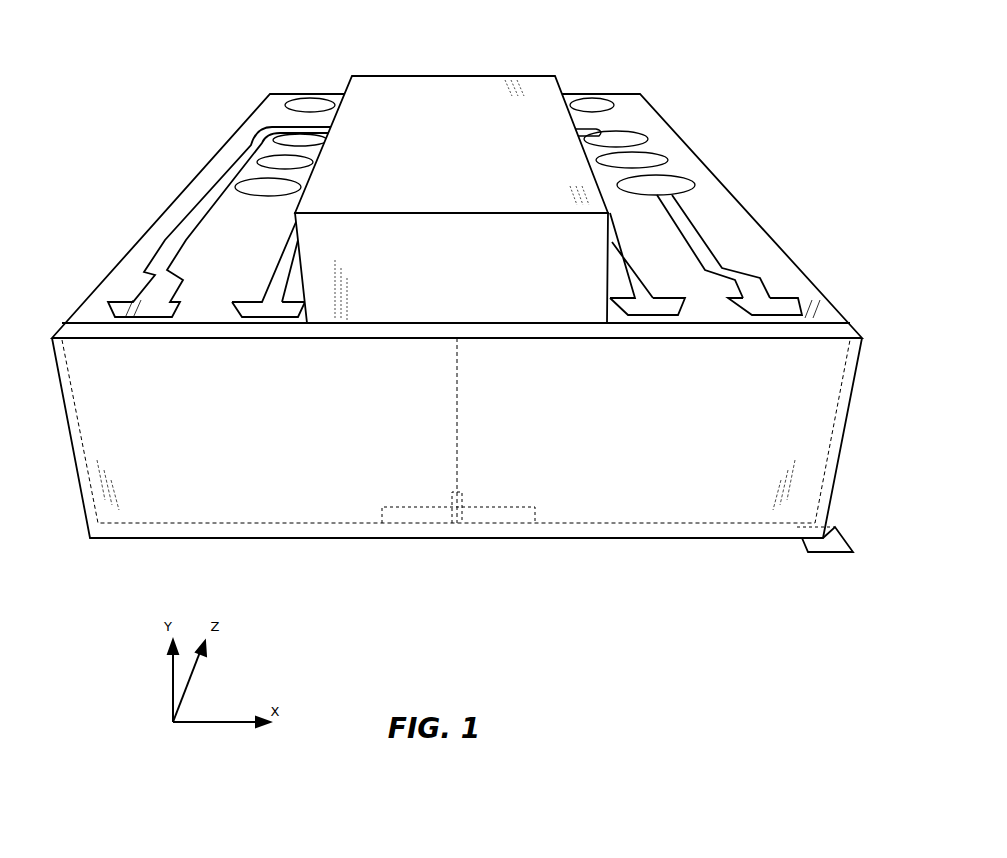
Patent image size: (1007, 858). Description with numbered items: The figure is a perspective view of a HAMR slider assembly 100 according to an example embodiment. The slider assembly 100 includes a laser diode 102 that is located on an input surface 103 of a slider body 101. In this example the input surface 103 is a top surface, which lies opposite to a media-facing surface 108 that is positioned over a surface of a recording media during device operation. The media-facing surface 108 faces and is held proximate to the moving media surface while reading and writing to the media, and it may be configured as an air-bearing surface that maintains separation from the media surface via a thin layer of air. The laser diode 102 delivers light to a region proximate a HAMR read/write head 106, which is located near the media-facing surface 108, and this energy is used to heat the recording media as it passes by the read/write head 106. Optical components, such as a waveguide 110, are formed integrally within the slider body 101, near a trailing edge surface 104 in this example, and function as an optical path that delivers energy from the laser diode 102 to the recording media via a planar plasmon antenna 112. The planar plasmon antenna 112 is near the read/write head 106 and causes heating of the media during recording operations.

The HAMR slider assembly 100 is at (650, 38).
The slider body 101 is at (247, 122).
The laser diode 102 is at (365, 75).
The input surface 103 is at (120, 282).
The trailing edge surface 104 is at (153, 513).
The HAMR read/write head 106 is at (464, 524).
The media-facing surface 108 is at (842, 553).
The waveguide 110 is at (457, 412).
The planar plasmon antenna 112 is at (455, 527).